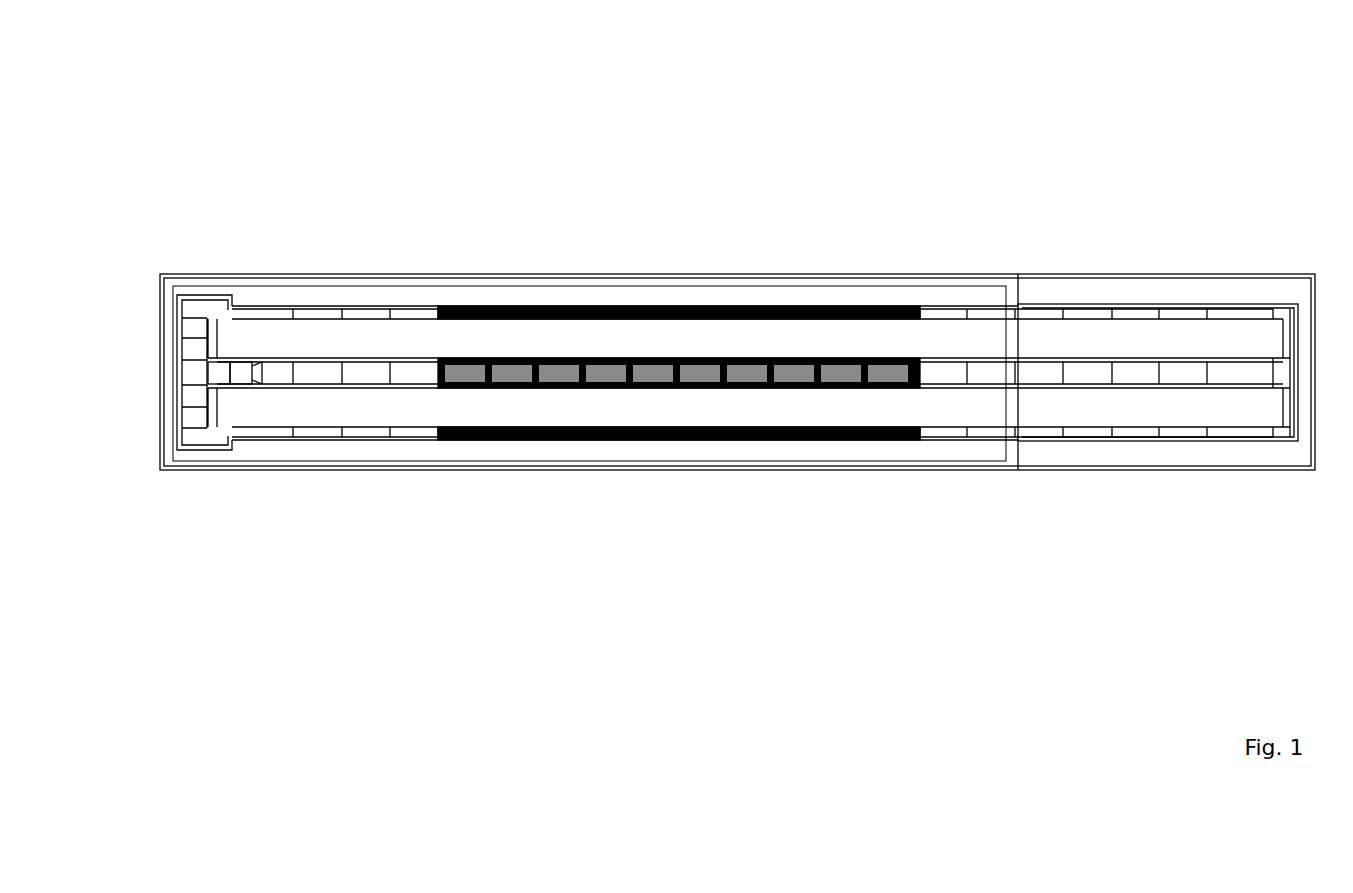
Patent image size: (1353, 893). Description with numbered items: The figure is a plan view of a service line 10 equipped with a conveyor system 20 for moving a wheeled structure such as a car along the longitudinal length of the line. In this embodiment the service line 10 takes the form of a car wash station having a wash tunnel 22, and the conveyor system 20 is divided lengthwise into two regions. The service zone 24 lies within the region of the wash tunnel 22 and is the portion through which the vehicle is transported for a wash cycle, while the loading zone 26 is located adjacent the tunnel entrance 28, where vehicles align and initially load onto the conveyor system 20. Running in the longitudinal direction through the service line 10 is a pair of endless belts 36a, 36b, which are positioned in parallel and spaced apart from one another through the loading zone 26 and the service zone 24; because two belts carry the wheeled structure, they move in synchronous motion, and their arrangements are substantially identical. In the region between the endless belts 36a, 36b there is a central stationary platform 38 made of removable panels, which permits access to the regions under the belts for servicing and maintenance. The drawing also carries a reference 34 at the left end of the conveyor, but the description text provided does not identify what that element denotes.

The service line 10 is at (1071, 82).
The conveyor system 20 is at (167, 172).
The wash tunnel 22 is at (699, 275).
The service zone 24 is at (1012, 570).
The loading zone 26 is at (1020, 570).
The tunnel entrance 28 is at (1012, 440).
The end wall 34 is at (163, 309).
The endless belt 36a is at (302, 340).
The endless belt 36b is at (1128, 403).
The central stationary platform 38 is at (548, 433).